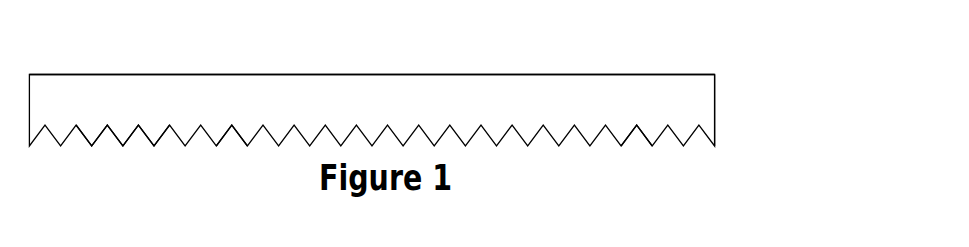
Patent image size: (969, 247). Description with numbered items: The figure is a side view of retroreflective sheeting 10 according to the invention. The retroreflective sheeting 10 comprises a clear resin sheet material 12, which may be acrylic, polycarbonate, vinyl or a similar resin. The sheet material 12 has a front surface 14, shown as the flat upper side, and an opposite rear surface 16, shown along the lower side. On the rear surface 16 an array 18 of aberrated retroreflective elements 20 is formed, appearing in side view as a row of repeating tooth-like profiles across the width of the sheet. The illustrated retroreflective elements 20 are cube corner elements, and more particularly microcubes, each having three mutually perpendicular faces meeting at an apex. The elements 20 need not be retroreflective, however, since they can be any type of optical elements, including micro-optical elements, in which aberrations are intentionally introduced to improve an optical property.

The retroreflective sheeting 10 is at (755, 65).
The sheet material 12 is at (700, 105).
The front surface 14 is at (604, 75).
The rear surface 16 is at (642, 140).
The array 18 is at (226, 159).
The retroreflective elements 20 is at (154, 146).